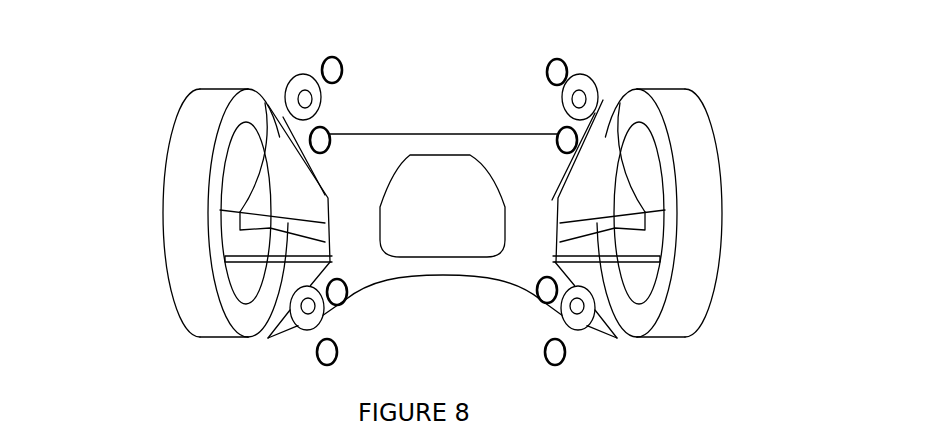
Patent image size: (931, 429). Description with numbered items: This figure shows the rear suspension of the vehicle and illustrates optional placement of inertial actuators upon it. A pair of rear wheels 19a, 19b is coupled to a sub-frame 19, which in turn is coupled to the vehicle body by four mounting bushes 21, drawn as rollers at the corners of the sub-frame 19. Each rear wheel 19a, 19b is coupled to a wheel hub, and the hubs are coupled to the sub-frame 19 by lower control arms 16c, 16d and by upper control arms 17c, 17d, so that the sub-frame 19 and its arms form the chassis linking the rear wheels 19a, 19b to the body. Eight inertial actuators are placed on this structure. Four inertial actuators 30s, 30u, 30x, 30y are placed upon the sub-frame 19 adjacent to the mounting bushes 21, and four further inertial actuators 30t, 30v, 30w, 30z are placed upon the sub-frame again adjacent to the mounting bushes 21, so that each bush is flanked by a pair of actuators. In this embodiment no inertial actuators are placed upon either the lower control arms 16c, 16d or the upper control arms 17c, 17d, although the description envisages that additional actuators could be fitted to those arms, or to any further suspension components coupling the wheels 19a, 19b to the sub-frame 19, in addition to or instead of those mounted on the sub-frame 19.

The mounting bushes 21 is at (291, 78).
The lower control arm 16c is at (268, 172).
The lower control arm 16d is at (637, 147).
The sub-frame 19 is at (603, 100).
The rear wheel 19a is at (178, 223).
The rear wheel 19b is at (707, 200).
The upper control arm 17c is at (286, 230).
The upper control arm 17d is at (612, 228).
The inertial actuator 30s is at (325, 135).
The inertial actuator 30t is at (332, 63).
The inertial actuator 30u is at (347, 298).
The inertial actuator 30v is at (335, 367).
The inertial actuator 30w is at (548, 361).
The inertial actuator 30x is at (520, 286).
The inertial actuator 30y is at (557, 130).
The inertial actuator 30z is at (553, 62).